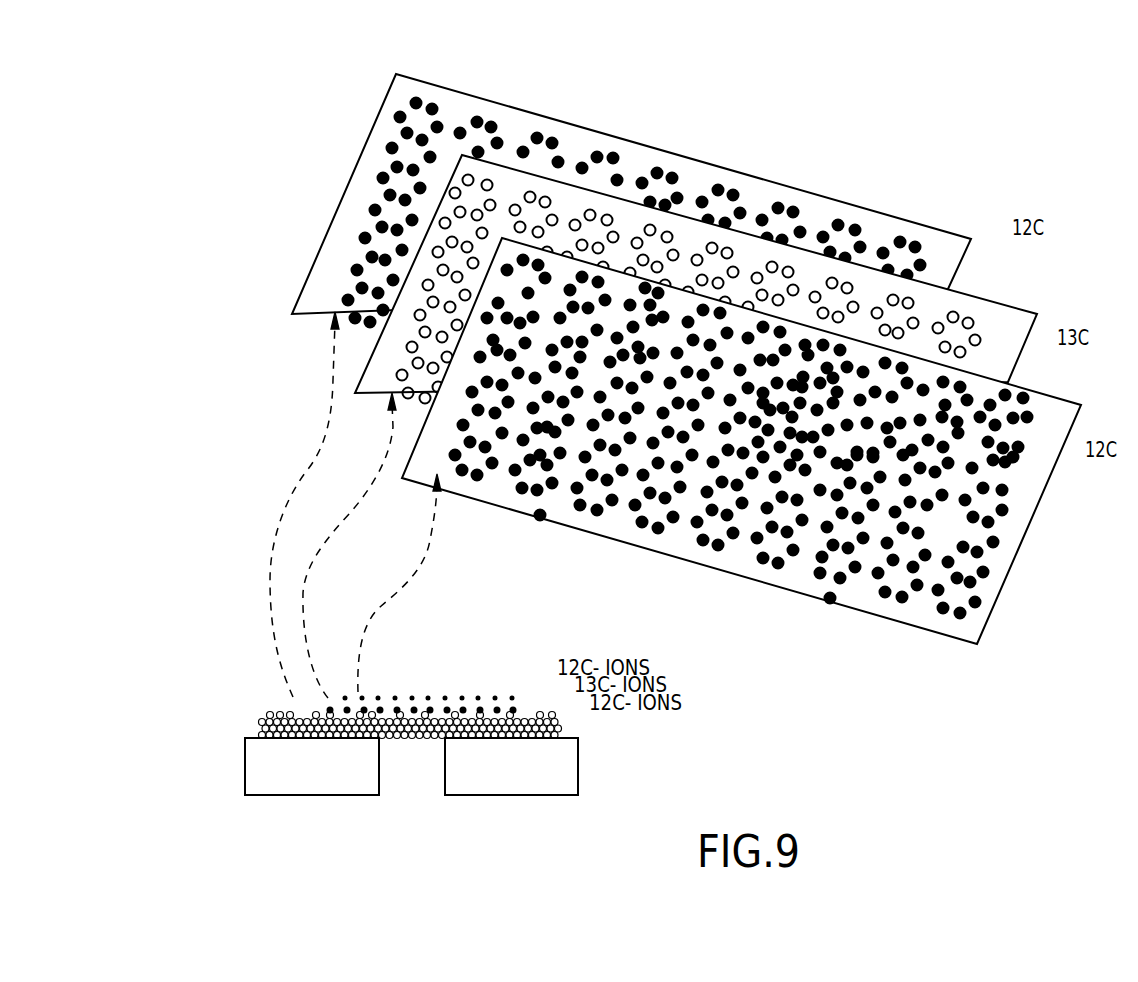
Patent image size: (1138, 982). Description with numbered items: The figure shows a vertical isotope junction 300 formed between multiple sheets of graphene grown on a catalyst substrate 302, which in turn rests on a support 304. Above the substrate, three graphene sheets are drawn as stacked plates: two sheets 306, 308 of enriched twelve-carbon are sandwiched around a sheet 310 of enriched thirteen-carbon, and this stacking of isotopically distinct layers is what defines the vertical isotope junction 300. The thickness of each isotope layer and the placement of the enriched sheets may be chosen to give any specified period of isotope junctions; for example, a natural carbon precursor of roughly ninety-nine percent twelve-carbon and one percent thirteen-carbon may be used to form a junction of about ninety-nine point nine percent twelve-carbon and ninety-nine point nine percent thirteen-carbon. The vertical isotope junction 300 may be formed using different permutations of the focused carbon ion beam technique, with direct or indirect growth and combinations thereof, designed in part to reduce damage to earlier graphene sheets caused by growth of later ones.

The vertical isotope junction 300 is at (228, 349).
The catalyst substrate 302 is at (238, 725).
The support 304 is at (248, 780).
The sheet of enriched 12C 306 is at (920, 225).
The sheet of enriched 12C 308 is at (1062, 400).
The sheet of enriched 13C 310 is at (1005, 306).